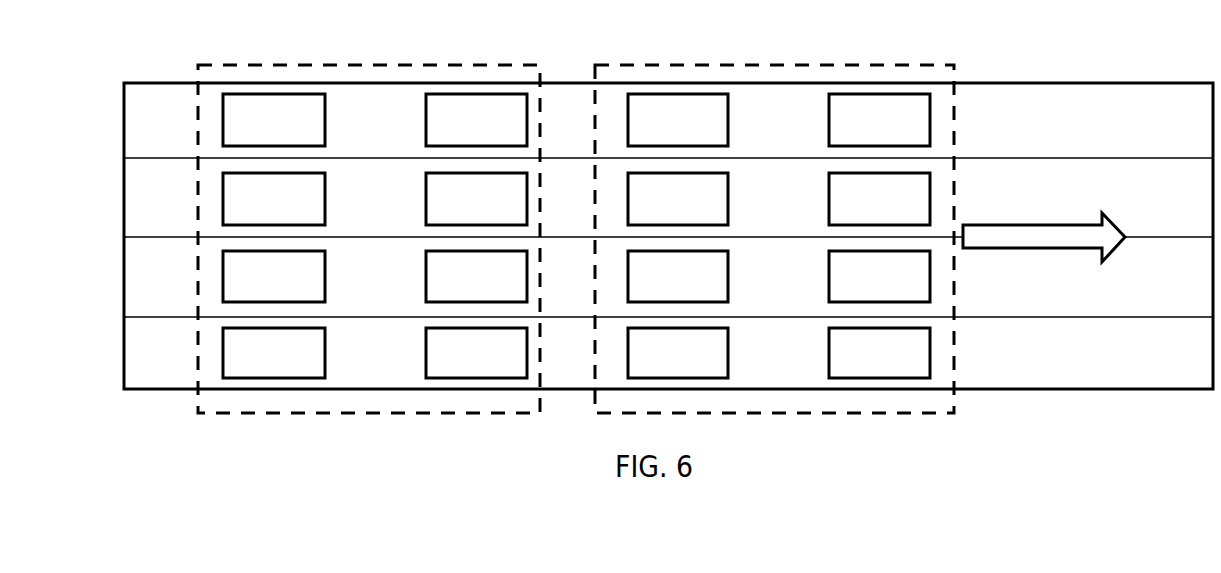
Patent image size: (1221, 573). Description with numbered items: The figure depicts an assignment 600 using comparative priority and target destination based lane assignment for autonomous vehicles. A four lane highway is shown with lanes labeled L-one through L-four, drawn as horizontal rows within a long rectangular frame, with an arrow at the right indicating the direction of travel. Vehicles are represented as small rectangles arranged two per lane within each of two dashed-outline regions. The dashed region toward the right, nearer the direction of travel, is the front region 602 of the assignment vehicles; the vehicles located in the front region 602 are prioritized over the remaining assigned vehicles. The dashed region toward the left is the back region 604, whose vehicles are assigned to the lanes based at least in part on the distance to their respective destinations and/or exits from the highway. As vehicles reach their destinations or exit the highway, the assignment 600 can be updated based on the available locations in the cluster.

The assignment 600 is at (678, 39).
The front region 602 is at (770, 65).
The back region 604 is at (365, 65).